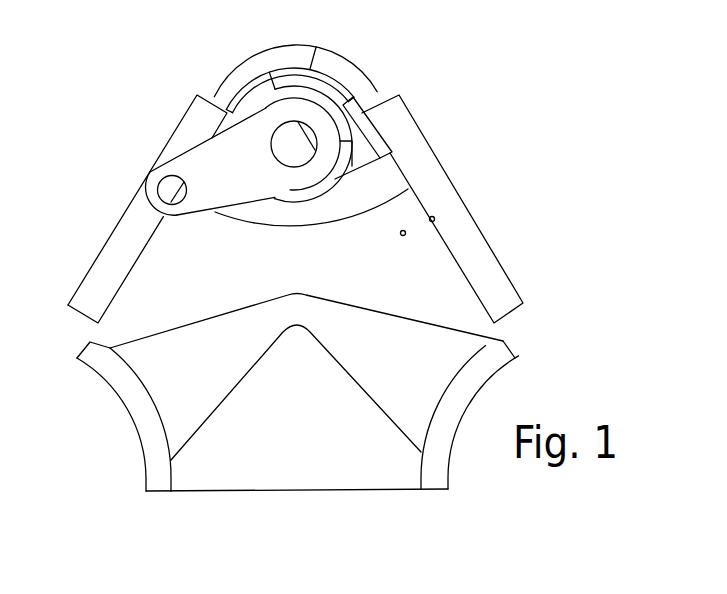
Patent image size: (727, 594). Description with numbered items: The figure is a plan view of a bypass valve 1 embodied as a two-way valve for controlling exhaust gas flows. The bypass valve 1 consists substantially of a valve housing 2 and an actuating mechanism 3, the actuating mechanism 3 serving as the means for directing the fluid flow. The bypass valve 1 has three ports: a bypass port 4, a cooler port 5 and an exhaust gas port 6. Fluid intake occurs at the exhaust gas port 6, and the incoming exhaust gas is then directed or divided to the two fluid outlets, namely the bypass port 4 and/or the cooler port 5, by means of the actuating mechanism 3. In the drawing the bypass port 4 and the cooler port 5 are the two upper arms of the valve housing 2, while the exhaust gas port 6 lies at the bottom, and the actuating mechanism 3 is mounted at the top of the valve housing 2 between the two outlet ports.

The bypass valve 1 is at (478, 115).
The valve housing 2 is at (363, 457).
The actuating mechanism 3 is at (285, 137).
The bypass port 4 is at (116, 227).
The cooler port 5 is at (478, 222).
The exhaust gas port 6 is at (252, 492).